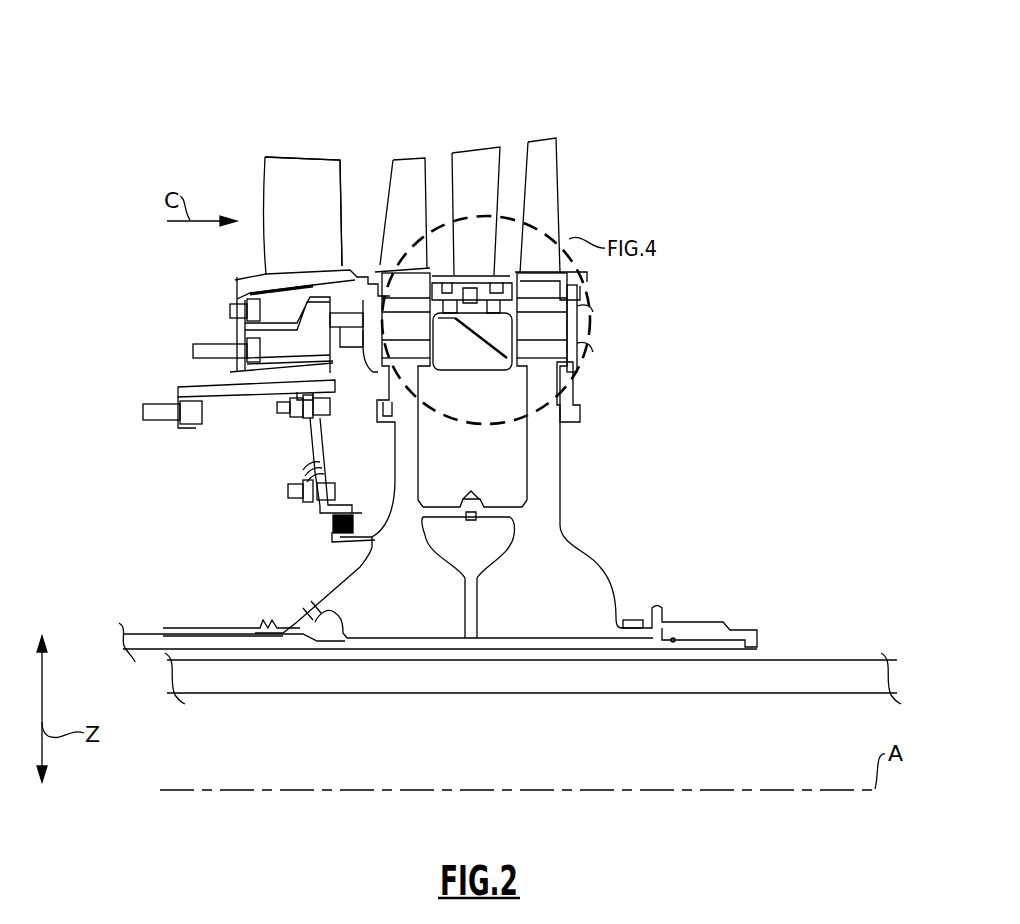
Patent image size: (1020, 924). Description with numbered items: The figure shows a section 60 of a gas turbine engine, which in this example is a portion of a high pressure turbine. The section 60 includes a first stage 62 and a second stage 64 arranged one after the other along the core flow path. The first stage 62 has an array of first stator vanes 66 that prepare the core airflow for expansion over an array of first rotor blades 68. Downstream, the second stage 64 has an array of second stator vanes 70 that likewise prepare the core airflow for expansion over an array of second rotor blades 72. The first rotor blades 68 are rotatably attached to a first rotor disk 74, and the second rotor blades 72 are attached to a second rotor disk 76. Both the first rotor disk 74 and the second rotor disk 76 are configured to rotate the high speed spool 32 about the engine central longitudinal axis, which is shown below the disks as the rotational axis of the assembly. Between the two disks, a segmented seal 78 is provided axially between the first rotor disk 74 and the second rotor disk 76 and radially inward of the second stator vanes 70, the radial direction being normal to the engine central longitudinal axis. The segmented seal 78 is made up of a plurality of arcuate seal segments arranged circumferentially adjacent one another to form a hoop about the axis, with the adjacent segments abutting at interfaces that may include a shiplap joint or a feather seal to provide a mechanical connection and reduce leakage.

The section 60 is at (138, 50).
The first stage 62 is at (428, 114).
The second stage 64 is at (590, 114).
The first stator vanes 66 is at (288, 182).
The first rotor blades 68 is at (410, 194).
The second stator vanes 70 is at (474, 180).
The second rotor blades 72 is at (549, 192).
The first rotor disk 74 is at (408, 455).
The second rotor disk 76 is at (548, 460).
The segmented seal 78 is at (471, 398).
The high speed spool 32 is at (145, 640).